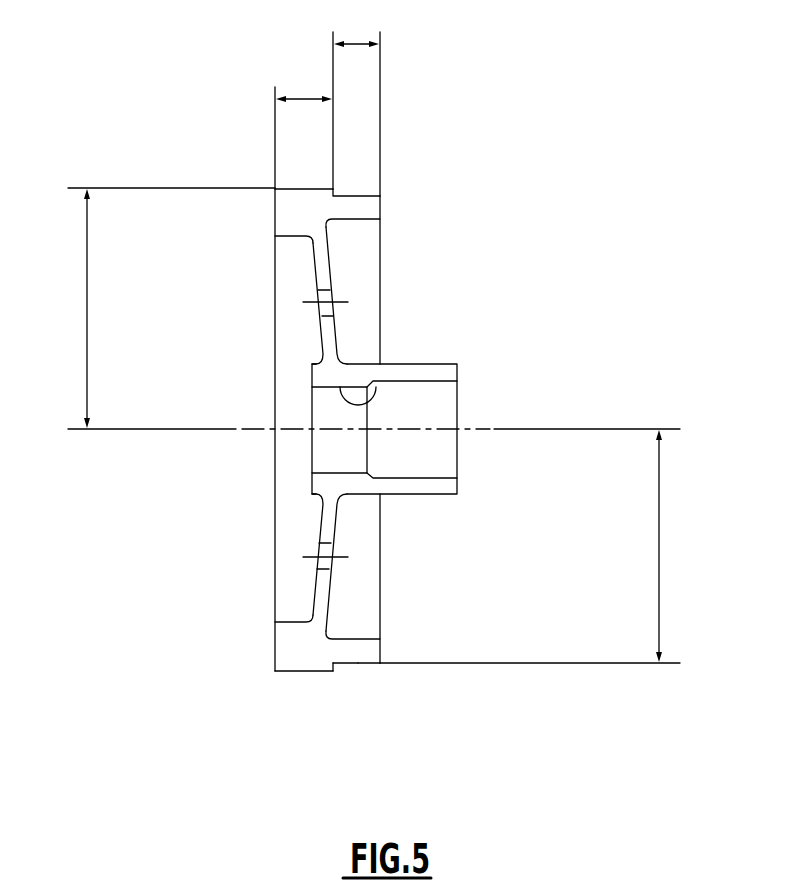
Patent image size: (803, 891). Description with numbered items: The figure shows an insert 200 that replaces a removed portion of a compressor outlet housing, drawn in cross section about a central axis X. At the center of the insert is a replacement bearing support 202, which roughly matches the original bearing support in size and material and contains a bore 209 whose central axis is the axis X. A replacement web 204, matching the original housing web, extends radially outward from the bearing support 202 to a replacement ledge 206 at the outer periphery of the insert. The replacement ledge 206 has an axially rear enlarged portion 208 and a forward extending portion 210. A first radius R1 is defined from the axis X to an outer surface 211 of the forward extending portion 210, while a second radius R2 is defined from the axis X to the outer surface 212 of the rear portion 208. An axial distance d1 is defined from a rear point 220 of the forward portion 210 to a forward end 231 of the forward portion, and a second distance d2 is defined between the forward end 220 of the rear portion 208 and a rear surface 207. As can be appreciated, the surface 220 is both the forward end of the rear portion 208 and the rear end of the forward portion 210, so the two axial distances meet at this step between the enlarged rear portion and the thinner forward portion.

The insert 200 is at (373, 377).
The replacement bearing support 202 is at (448, 373).
The replacement web 204 is at (323, 268).
The replacement ledge 206 is at (318, 208).
The rear surface 207 is at (275, 642).
The rear enlarged portion 208 is at (288, 672).
The bore 209 is at (376, 387).
The forward extending portion 210 is at (360, 664).
The outer surface 211 is at (353, 664).
The outer surface 212 is at (298, 186).
The rear point 220 is at (342, 667).
The forward end 231 is at (381, 201).
The central axis X is at (294, 432).
The first radius R1 is at (539, 546).
The second radius R2 is at (161, 308).
The axial distance d1 is at (356, 101).
The second distance d2 is at (303, 126).